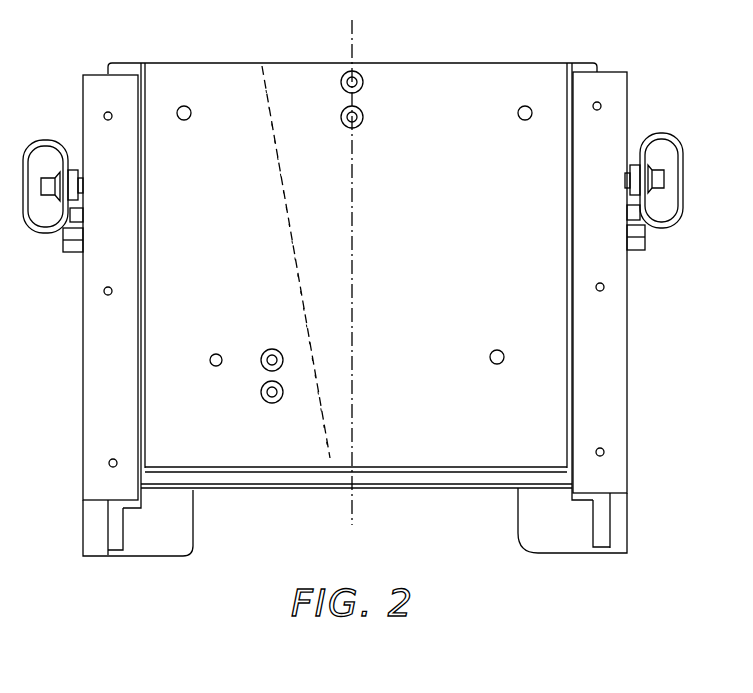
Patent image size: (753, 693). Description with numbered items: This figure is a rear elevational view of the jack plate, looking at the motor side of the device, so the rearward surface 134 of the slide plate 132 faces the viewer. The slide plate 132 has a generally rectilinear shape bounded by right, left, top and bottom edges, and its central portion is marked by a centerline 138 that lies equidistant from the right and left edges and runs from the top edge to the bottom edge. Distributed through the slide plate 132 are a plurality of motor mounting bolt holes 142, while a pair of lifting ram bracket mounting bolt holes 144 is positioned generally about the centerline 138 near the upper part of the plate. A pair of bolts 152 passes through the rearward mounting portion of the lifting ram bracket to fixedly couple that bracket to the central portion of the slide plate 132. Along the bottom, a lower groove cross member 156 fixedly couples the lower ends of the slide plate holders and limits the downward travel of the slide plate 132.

The slide plate 132 is at (470, 247).
The rearward surface 134 is at (470, 188).
The centerline 138 is at (352, 430).
The motor mounting bolt holes 142 is at (527, 105).
The lifting ram bracket mounting bolt holes 144 is at (342, 78).
The bolts 152 is at (362, 82).
The lower groove cross member 156 is at (300, 486).